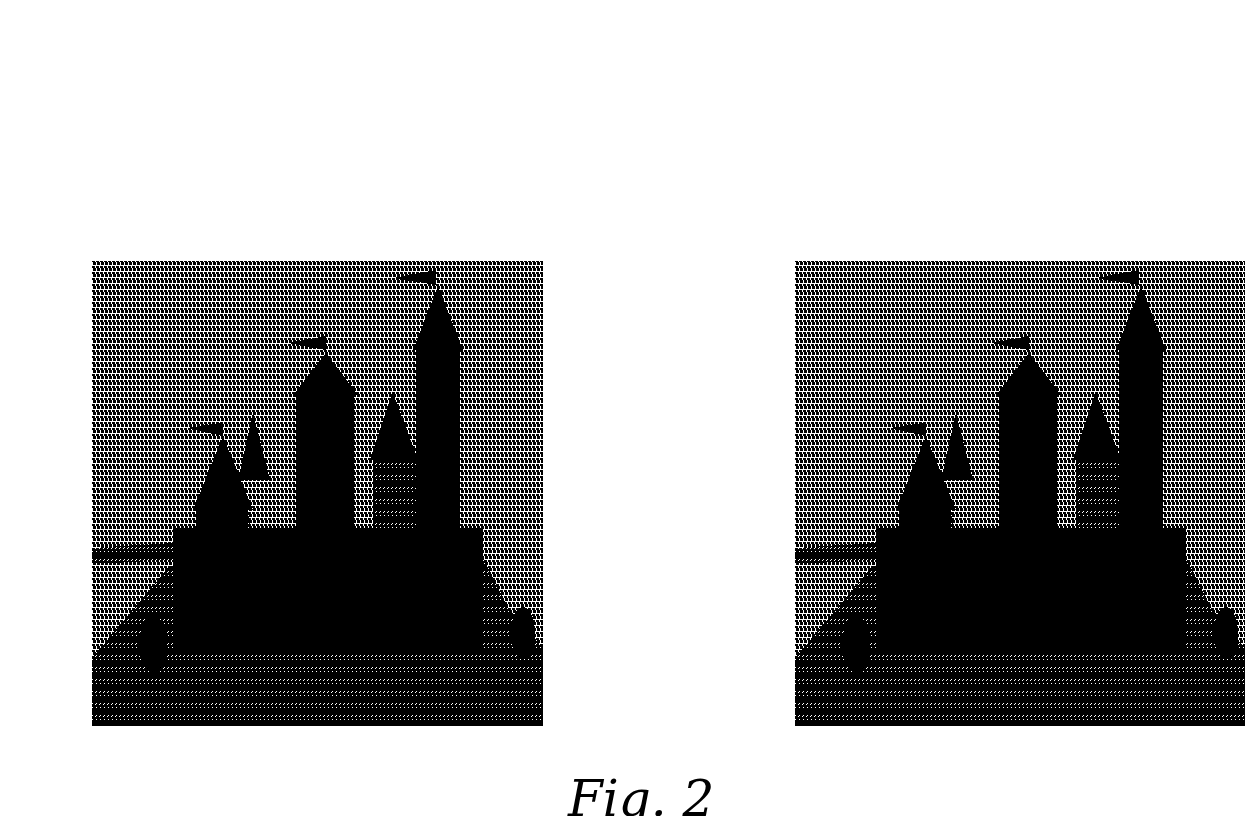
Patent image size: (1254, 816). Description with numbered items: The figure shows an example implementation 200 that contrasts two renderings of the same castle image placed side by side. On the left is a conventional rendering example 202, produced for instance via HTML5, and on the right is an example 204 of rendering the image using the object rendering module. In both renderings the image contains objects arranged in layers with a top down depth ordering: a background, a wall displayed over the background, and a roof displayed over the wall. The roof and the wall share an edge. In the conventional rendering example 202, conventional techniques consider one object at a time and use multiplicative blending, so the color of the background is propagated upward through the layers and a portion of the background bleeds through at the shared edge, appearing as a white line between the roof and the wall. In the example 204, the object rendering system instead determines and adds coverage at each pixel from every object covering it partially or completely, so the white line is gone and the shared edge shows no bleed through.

The example implementation 200 is at (135, 85).
The conventional rendering example 202 is at (117, 200).
The example of rendering using the object rendering module 204 is at (845, 208).